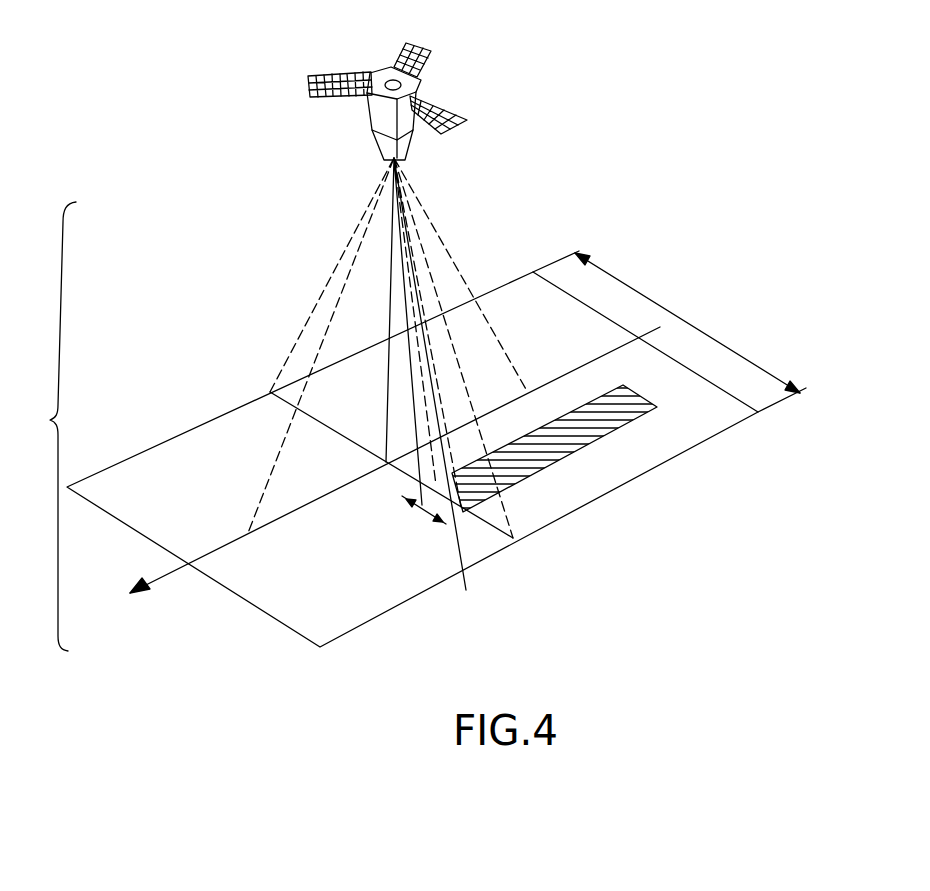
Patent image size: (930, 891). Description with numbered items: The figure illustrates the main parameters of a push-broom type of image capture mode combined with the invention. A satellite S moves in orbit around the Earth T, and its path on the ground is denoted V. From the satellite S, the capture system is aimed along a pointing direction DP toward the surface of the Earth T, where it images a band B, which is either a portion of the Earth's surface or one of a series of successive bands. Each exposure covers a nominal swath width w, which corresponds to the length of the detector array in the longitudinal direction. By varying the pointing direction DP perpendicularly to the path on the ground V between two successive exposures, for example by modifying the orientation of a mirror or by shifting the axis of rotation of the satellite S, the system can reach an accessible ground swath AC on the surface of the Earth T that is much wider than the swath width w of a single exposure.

The satellite S is at (421, 81).
The Earth T is at (397, 426).
The pointing direction DP is at (408, 266).
The band B is at (470, 390).
The nominal swath width w is at (424, 510).
The path on the ground V is at (390, 460).
The accessible ground swath AC is at (687, 331).